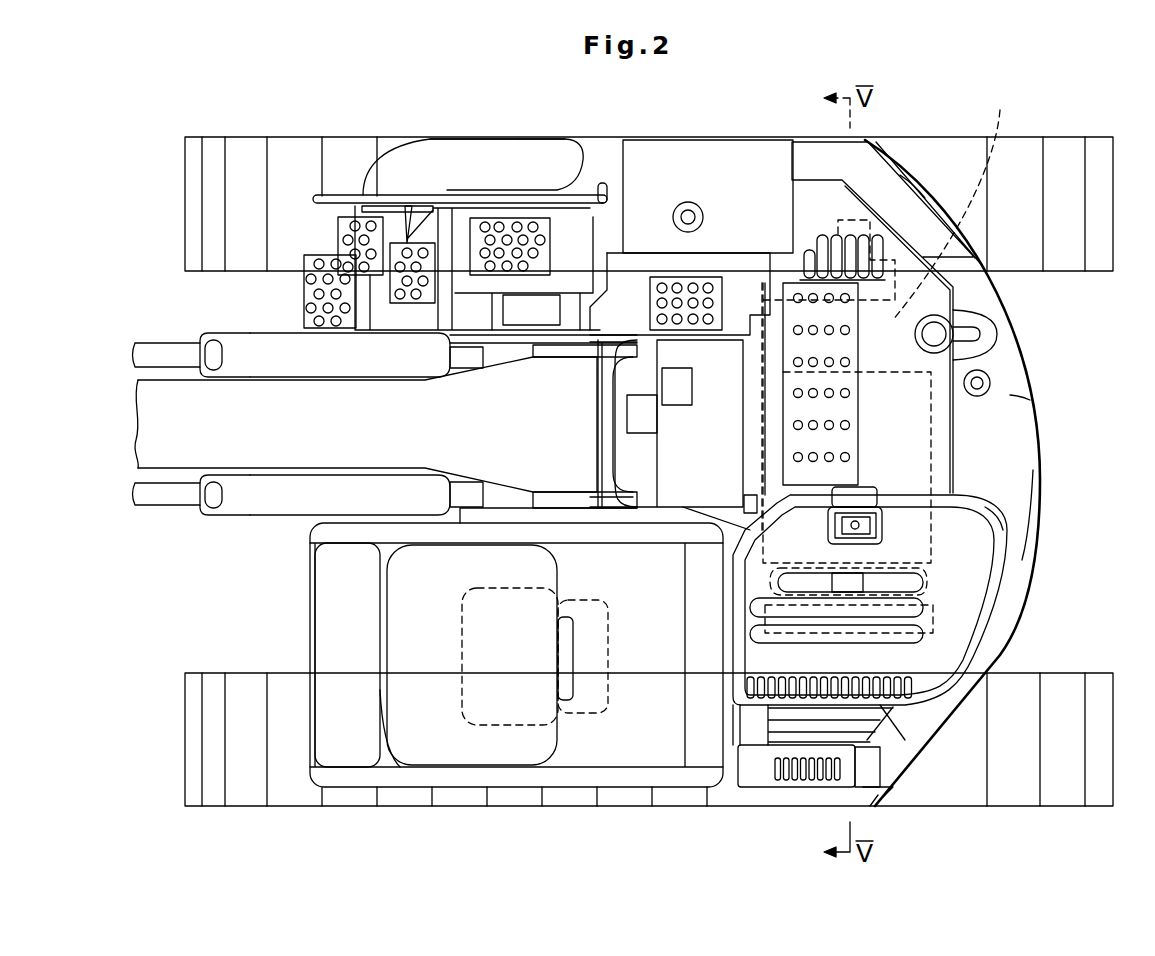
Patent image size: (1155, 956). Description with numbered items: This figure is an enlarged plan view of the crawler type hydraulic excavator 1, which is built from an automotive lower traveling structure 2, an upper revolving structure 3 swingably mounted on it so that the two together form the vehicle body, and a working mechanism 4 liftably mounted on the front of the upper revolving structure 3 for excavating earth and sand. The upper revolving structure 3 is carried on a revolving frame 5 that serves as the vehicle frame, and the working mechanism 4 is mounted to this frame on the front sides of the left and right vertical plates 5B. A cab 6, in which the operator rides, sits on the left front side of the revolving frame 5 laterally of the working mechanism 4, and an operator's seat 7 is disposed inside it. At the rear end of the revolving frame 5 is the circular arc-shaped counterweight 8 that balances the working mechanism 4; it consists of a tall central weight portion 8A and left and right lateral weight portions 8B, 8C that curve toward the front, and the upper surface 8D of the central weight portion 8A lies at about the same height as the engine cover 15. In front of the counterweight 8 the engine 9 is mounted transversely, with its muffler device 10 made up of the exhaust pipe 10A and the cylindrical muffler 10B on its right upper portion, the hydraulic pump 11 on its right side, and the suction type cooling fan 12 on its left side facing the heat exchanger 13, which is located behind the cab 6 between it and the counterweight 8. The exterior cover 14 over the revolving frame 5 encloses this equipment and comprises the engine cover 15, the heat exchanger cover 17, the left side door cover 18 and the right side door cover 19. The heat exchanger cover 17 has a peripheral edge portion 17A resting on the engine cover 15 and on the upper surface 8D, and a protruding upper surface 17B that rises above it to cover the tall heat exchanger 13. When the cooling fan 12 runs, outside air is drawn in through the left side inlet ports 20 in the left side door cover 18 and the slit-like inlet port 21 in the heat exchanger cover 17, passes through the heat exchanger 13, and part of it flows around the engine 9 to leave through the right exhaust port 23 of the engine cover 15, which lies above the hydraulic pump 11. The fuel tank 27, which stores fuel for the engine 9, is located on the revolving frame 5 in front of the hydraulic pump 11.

The hydraulic excavator 1 is at (520, 138).
The lower traveling structure 2 is at (282, 167).
The upper revolving structure 3 is at (562, 138).
The working mechanism 4 is at (173, 430).
The revolving frame 5 is at (475, 330).
The vertical plates 5B is at (618, 333).
The cab 6 is at (447, 777).
The operator's seat 7 is at (513, 725).
The counterweight 8 is at (1022, 453).
The central weight portion 8A is at (1027, 482).
The left lateral weight portion 8B is at (882, 790).
The right lateral weight portion 8C is at (922, 185).
The upper surface 8D is at (1027, 398).
The engine 9 is at (993, 380).
The muffler device 10 is at (955, 201).
The exhaust pipe 10A is at (977, 332).
The muffler 10B is at (955, 300).
The hydraulic pump 11 is at (845, 218).
The cooling fan 12 is at (933, 593).
The heat exchanger 13 is at (933, 620).
The exterior cover 14 is at (1006, 528).
The engine cover 15 is at (915, 428).
The heat exchanger cover 17 is at (978, 552).
The peripheral edge portion 17A is at (945, 590).
The protruding upper surface 17B is at (937, 655).
The left side door cover 18 is at (750, 777).
The right side door cover 19 is at (862, 165).
The left side inlet ports 20 is at (802, 778).
The inlet port 21 is at (867, 690).
The right exhaust port 23 is at (818, 232).
The fuel tank 27 is at (707, 180).